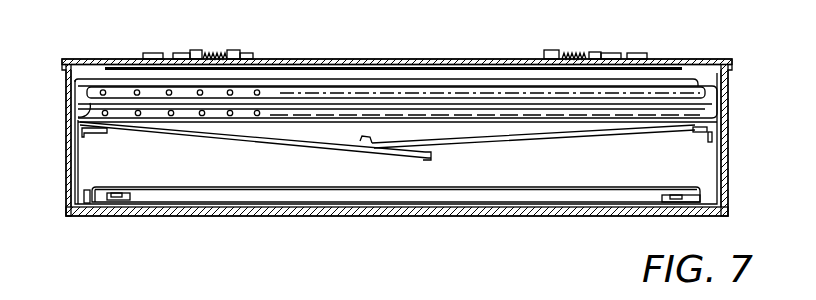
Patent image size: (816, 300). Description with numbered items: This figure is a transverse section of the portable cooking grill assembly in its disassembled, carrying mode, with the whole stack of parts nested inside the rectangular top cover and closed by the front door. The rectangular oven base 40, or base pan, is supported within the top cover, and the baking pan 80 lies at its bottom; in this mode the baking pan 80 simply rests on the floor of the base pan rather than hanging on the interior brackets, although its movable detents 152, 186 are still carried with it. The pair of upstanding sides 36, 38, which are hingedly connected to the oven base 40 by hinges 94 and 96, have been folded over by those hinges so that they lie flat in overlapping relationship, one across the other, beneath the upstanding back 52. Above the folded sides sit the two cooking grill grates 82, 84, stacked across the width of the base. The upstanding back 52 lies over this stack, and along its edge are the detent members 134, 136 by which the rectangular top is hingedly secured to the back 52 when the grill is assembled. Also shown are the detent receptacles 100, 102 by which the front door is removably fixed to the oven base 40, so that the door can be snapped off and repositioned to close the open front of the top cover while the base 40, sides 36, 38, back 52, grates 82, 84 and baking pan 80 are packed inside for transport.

The upstanding side 36 is at (505, 139).
The upstanding side 38 is at (187, 132).
The oven base 40 is at (725, 154).
The upstanding back 52 is at (315, 121).
The baking pan 80 is at (223, 191).
The grate 82 is at (687, 82).
The grate 84 is at (78, 117).
The hinge 94 is at (704, 132).
The hinge 96 is at (100, 133).
The detent receptacle 100 is at (532, 53).
The detent receptacle 102 is at (255, 57).
The detent member 134 is at (180, 51).
The detent member 136 is at (612, 52).
The movable detent 152 is at (130, 201).
The movable detent 186 is at (705, 195).